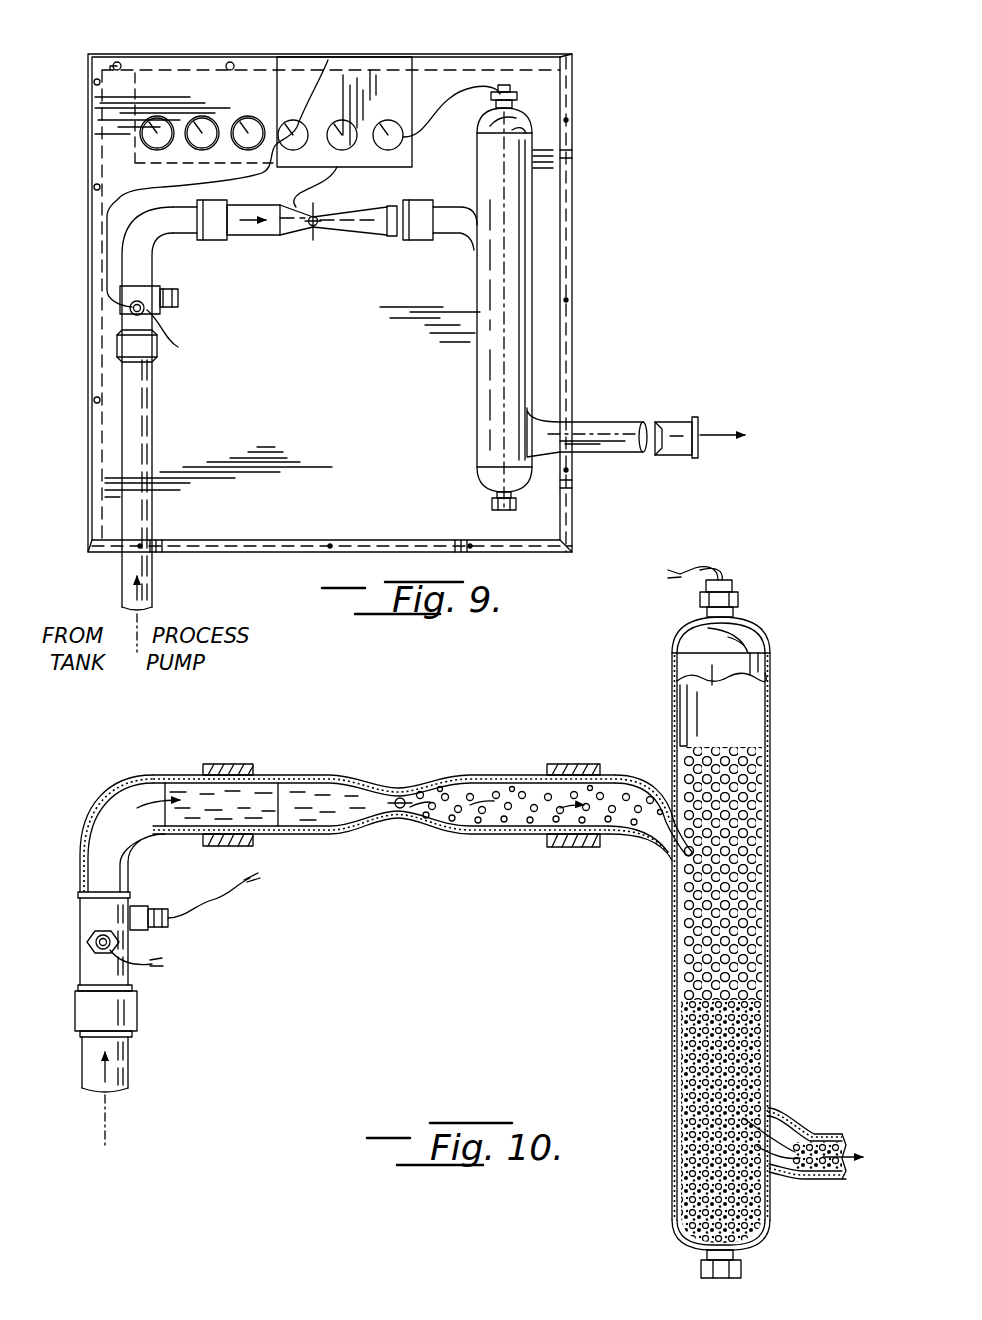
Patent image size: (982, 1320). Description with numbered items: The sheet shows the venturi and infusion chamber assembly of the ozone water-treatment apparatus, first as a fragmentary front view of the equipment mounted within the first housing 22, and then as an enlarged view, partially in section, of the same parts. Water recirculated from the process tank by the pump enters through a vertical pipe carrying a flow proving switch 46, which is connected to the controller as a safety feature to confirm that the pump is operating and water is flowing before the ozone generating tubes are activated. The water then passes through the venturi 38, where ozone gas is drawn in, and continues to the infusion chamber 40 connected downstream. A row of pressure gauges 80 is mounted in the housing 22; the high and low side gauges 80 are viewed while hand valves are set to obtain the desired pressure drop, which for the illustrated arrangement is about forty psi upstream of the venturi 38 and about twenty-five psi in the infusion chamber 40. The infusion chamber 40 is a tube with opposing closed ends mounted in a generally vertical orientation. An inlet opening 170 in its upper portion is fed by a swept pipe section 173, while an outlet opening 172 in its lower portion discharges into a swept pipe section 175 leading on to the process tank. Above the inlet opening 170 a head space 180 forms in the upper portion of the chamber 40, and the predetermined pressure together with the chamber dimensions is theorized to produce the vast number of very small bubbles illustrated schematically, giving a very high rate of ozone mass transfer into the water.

In FIG. 9, the first housing 22 is at (574, 101).
In FIG. 9, the pressure gauges 80 is at (249, 118).
In FIG. 9, the flow proving switch 46 is at (132, 306).
In FIG. 10, the flow proving switch 46 is at (112, 940).
In FIG. 9, the venturi 38 is at (335, 238).
In FIG. 10, the venturi 38 is at (452, 829).
In FIG. 9, the infusion chamber 40 is at (490, 382).
In FIG. 10, the infusion chamber 40 is at (672, 950).
In FIG. 10, the inlet opening 170 is at (674, 815).
In FIG. 10, the swept pipe section 173 is at (655, 838).
In FIG. 10, the head space 180 is at (722, 718).
In FIG. 10, the outlet opening 172 is at (770, 1127).
In FIG. 10, the swept pipe section 175 is at (795, 1180).